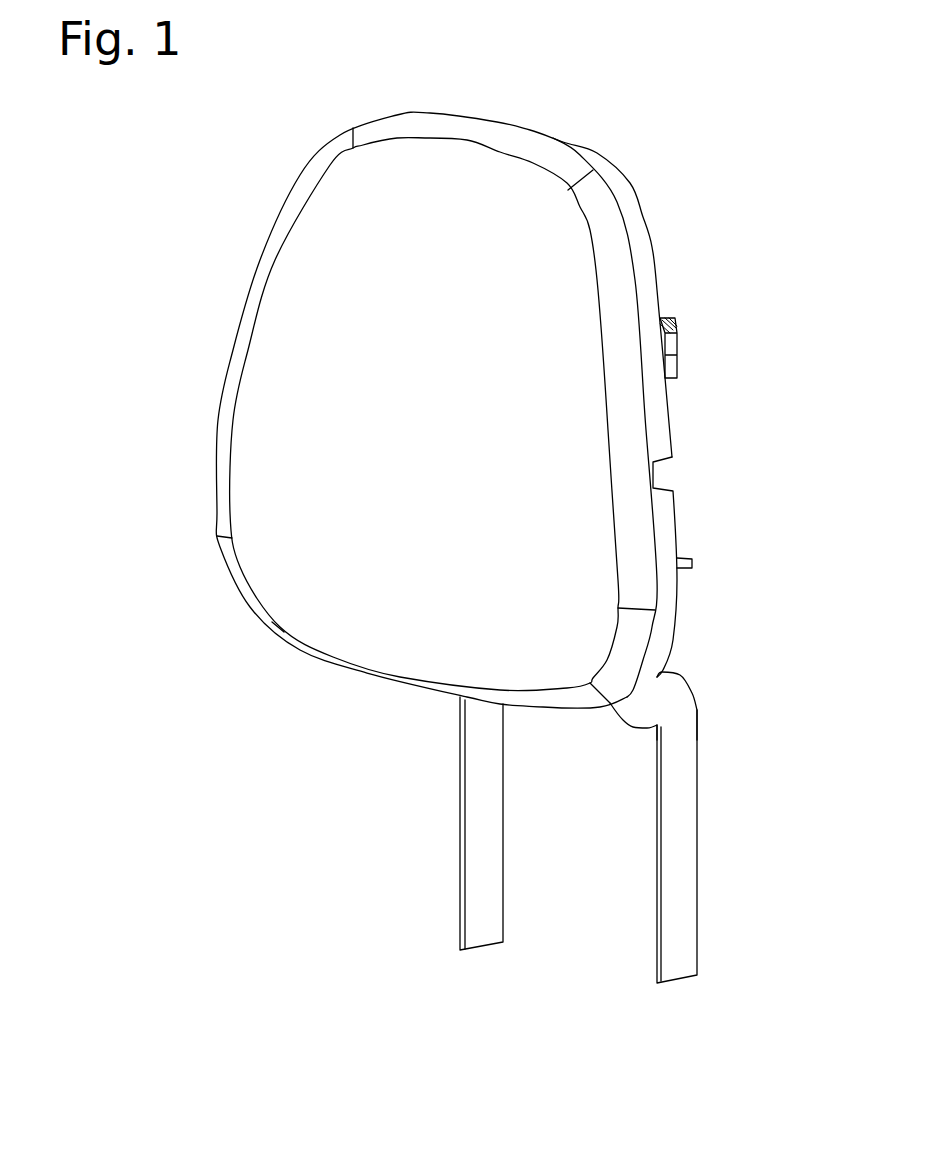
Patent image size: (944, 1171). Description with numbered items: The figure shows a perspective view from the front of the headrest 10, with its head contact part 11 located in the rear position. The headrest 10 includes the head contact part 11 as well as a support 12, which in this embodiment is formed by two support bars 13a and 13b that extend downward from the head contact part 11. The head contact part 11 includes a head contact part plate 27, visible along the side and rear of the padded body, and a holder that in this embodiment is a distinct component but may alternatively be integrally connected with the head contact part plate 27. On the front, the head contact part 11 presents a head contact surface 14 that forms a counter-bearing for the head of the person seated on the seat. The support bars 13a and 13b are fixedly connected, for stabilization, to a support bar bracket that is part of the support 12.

The headrest 10 is at (508, 506).
The head contact part 11 is at (528, 145).
The head contact surface 14 is at (395, 414).
The head contact part plate 27 is at (652, 273).
The support 12 is at (755, 734).
The support bar 13a is at (475, 822).
The support bar 13b is at (690, 827).